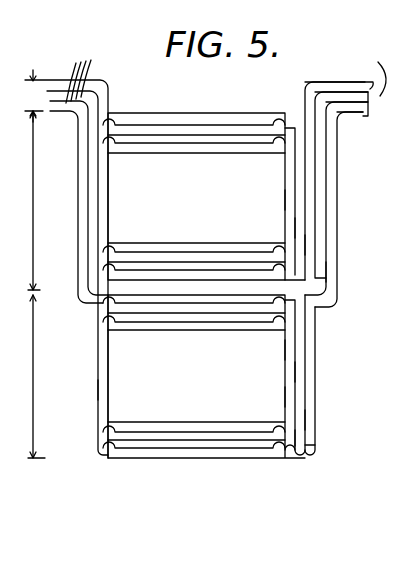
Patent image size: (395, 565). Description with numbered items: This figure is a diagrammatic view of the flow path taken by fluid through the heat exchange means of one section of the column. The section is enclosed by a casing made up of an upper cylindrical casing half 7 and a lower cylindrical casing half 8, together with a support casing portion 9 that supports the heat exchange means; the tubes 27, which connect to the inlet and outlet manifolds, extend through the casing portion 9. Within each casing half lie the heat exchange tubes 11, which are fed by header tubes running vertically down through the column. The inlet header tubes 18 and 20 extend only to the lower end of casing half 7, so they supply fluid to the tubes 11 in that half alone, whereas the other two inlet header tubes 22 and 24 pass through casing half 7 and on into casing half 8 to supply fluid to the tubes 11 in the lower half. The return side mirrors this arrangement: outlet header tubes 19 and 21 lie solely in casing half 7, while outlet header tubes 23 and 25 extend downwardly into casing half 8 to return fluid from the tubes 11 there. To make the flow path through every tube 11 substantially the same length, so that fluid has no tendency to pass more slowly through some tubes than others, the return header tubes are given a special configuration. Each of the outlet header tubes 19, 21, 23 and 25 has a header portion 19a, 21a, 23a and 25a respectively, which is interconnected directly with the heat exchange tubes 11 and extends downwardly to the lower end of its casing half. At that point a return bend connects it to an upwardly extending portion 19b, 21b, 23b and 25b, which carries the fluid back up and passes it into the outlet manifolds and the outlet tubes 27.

The casing half 7 is at (154, 200).
The casing half 8 is at (164, 376).
The support casing portion 9 is at (33, 96).
The heat exchange tubes 11 is at (232, 124).
The inlet header tube 18 is at (112, 114).
The outlet header tube 19 is at (302, 108).
The header portion 19a is at (285, 200).
The upwardly extending portion 19b is at (296, 228).
The inlet header tube 20 is at (78, 181).
The outlet header tube 21 is at (295, 170).
The header portion 21a is at (305, 245).
The upwardly extending portion 21b is at (328, 273).
The inlet header tube 22 is at (84, 284).
The outlet header tube 23 is at (287, 352).
The header portion 23a is at (285, 397).
The upwardly extending portion 23b is at (310, 421).
The inlet header tube 24 is at (98, 390).
The outlet header tube 25 is at (296, 372).
The header portion 25a is at (300, 439).
The upwardly extending portion 25b is at (308, 451).
The tubes 27 is at (225, 78).